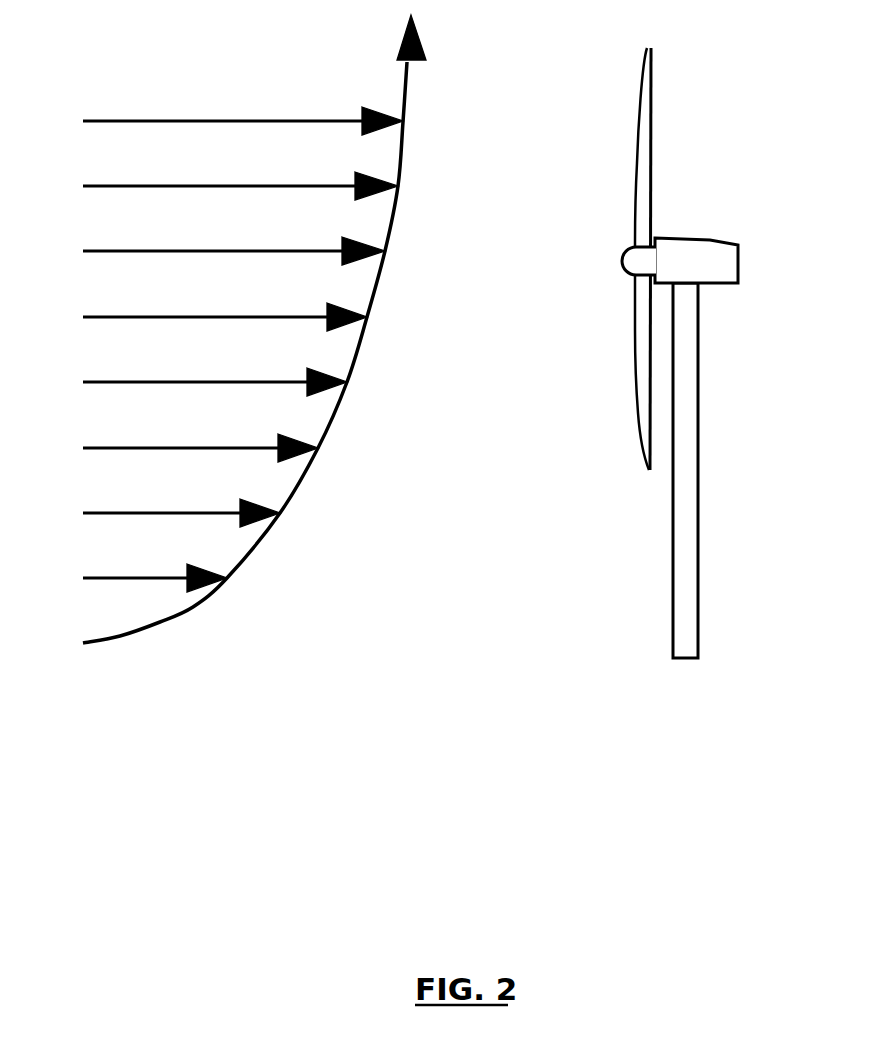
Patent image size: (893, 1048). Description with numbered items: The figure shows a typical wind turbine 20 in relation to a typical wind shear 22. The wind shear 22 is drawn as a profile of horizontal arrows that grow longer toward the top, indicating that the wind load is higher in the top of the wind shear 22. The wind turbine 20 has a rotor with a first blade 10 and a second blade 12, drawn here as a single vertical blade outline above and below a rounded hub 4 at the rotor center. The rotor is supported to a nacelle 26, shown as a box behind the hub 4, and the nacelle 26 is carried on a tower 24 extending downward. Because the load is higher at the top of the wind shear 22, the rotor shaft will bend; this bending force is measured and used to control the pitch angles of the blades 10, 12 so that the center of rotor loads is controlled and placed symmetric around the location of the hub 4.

The hub 4 is at (623, 257).
The first blade 10 is at (652, 152).
The second blade 12 is at (632, 380).
The wind turbine 20 is at (664, 449).
The wind shear 22 is at (173, 656).
The tower 24 is at (700, 507).
The nacelle 26 is at (710, 240).